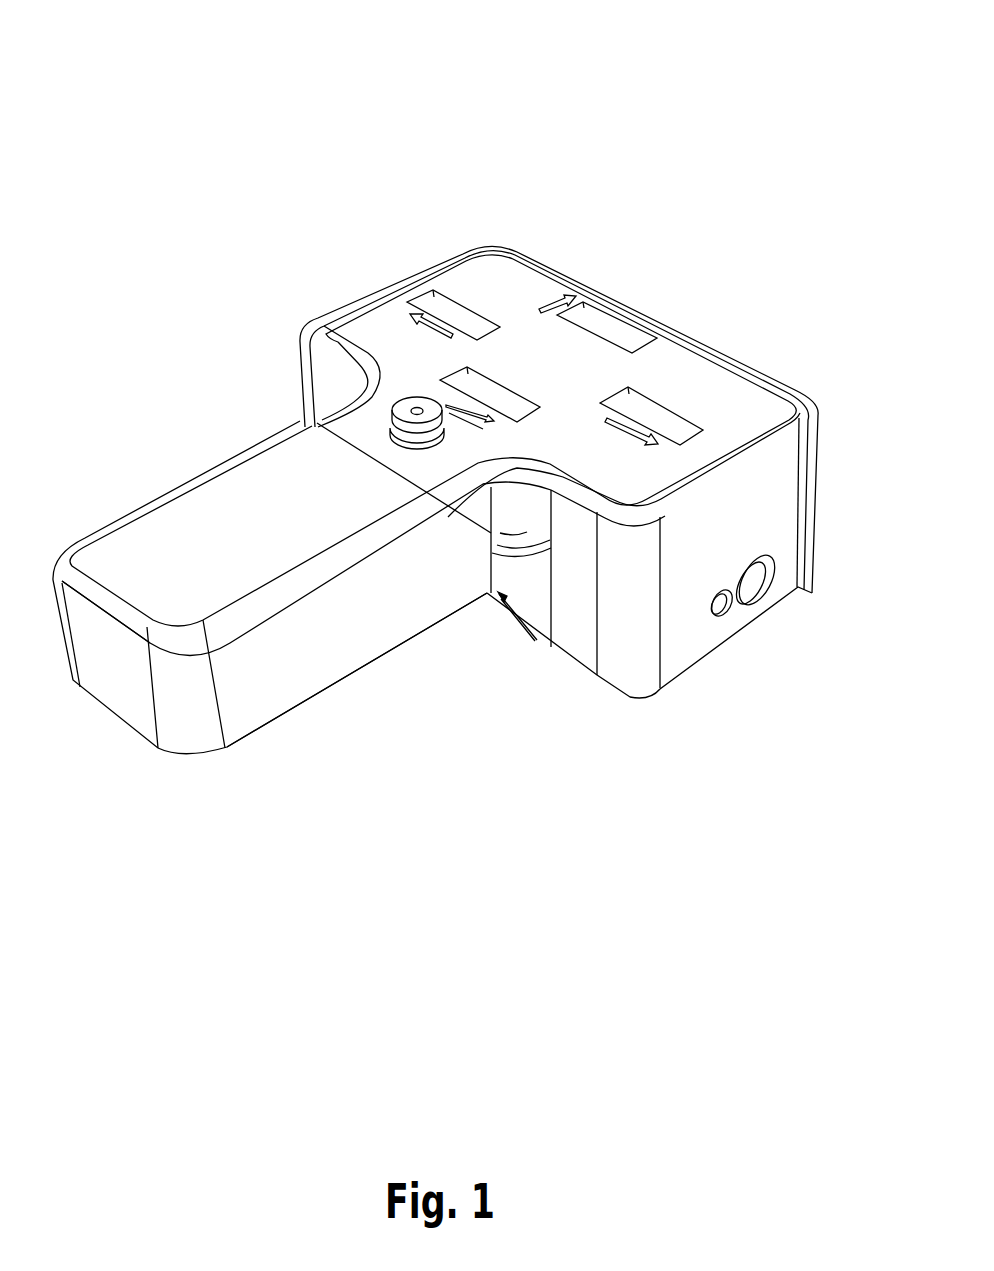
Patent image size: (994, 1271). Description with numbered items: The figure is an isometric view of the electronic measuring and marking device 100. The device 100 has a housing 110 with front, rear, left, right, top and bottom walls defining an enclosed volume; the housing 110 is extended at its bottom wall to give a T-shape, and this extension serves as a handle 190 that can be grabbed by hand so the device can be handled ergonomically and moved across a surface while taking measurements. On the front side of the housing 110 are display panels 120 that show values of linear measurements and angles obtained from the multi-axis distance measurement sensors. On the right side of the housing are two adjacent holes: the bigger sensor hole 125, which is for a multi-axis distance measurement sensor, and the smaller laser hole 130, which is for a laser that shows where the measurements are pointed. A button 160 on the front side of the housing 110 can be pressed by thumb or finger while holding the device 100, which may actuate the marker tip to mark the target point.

The device 100 is at (586, 112).
The housing 110 is at (307, 693).
The display panels 120 is at (657, 418).
The sensor hole 125 is at (752, 597).
The laser hole 130 is at (713, 620).
The button 160 is at (395, 417).
The handle 190 is at (123, 546).